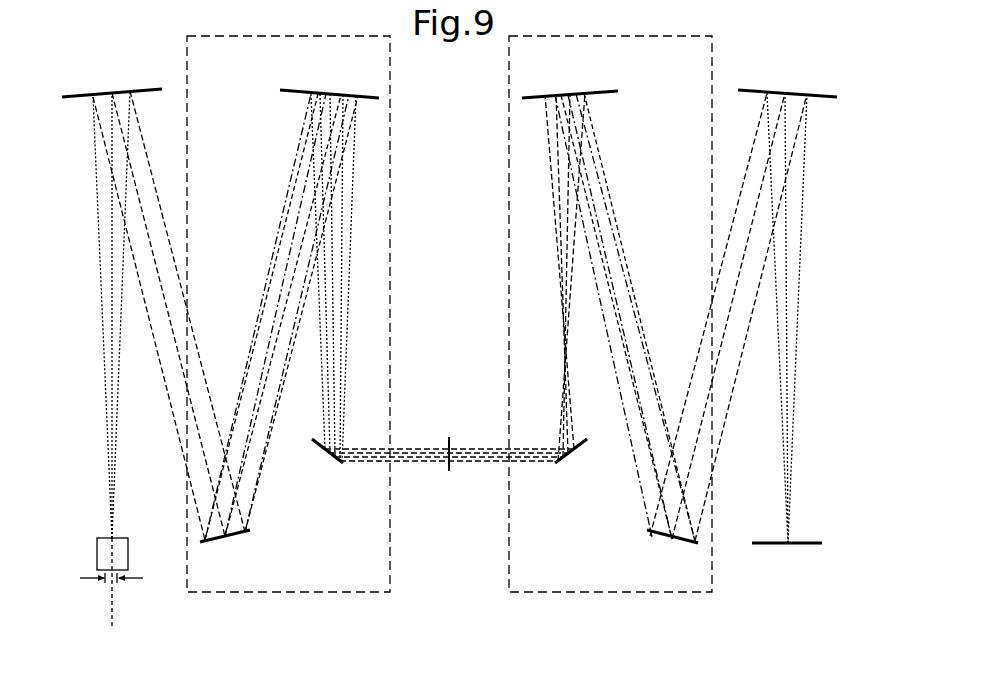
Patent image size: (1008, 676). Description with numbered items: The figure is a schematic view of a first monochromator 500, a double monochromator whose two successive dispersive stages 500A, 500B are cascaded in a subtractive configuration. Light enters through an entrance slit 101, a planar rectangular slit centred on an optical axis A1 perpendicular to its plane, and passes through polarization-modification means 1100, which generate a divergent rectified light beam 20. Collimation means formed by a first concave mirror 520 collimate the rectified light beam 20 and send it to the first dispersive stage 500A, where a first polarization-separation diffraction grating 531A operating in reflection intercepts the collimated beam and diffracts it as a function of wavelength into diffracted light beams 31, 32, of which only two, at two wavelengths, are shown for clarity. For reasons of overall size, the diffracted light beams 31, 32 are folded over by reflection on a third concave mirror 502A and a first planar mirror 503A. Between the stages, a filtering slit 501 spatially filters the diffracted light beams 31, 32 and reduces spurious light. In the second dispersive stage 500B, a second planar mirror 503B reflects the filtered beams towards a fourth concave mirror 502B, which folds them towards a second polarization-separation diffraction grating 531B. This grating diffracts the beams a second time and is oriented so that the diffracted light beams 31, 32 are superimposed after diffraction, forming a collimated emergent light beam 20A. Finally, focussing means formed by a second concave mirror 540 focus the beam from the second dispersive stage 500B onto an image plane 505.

The first monochromator 500 is at (447, 347).
The first dispersive stage 500A is at (293, 593).
The second dispersive stage 500B is at (607, 593).
The first concave mirror 520 is at (77, 95).
The third concave mirror 502A is at (298, 92).
The fourth concave mirror 502B is at (602, 92).
The second concave mirror 540 is at (755, 92).
The first polarization-separation diffraction grating 531A is at (235, 540).
The second polarization-separation diffraction grating 531B is at (683, 542).
The first planar mirror 503A is at (316, 446).
The second planar mirror 503B is at (588, 447).
The filtering slit 501 is at (441, 470).
The image plane 505 is at (808, 542).
The polarization-modification means 1100 is at (100, 530).
The entrance slit 101 is at (95, 580).
The optical axis A1 is at (115, 602).
The rectified light beam 20 is at (105, 248).
The emergent light beam 20A is at (753, 183).
The diffracted light beam 31 is at (287, 278).
The diffracted light beam 32 is at (280, 324).